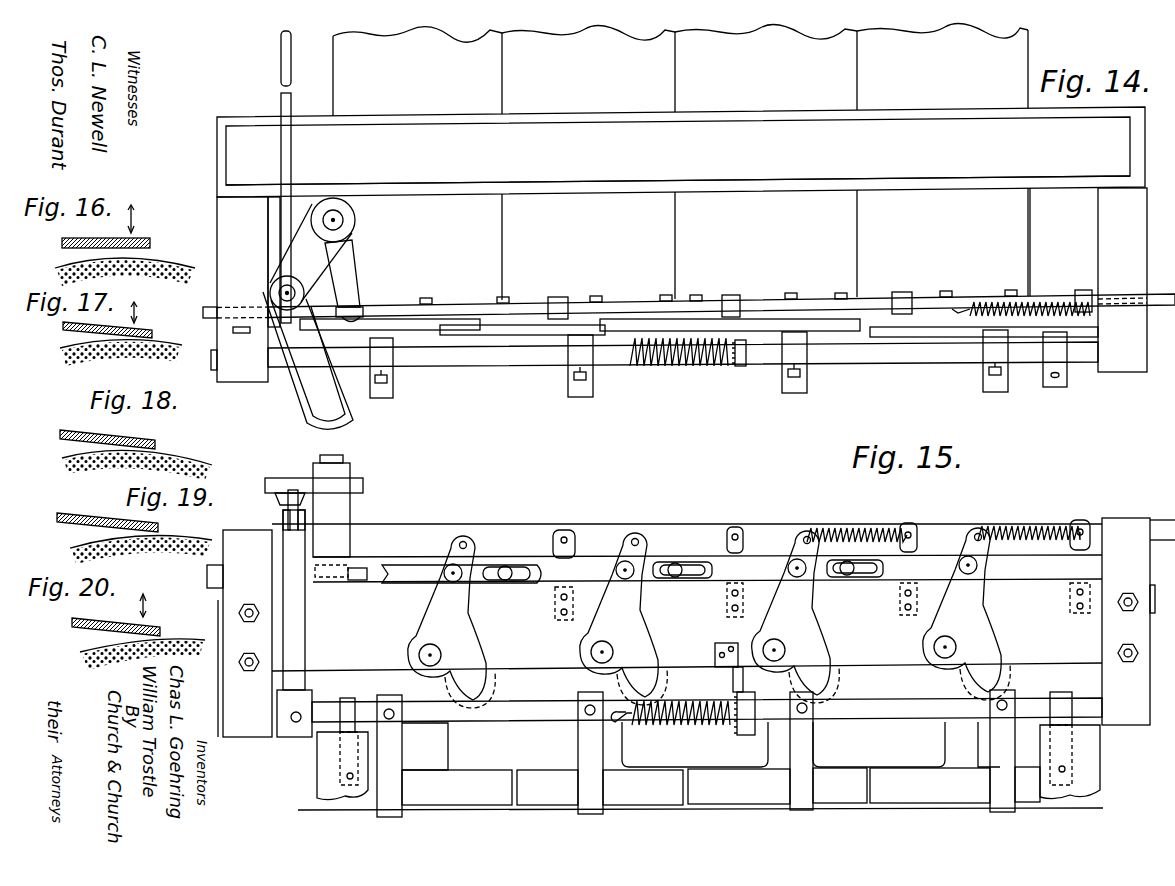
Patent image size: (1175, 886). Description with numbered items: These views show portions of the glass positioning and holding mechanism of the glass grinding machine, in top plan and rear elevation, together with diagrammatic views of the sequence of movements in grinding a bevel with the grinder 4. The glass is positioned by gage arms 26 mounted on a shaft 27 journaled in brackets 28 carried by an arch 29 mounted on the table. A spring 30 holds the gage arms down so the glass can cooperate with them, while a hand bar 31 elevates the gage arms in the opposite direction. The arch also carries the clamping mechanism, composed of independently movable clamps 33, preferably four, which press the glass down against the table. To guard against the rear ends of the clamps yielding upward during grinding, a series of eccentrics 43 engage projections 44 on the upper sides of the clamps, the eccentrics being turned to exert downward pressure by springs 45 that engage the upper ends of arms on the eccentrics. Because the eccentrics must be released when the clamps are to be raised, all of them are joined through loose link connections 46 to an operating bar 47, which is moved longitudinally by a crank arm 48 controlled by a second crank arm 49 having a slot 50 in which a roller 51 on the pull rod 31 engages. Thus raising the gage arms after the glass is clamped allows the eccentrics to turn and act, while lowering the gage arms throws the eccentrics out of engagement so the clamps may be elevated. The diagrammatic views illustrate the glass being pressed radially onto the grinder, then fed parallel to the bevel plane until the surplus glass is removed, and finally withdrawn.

In FIG. 16, the grinder 4 is at (125, 270).
In FIG. 17, the grinder 4 is at (125, 351).
In FIG. 18, the grinder 4 is at (192, 456).
In FIG. 19, the grinder 4 is at (190, 550).
In FIG. 20, the grinder 4 is at (90, 648).
In FIG. 14, the gage arms 26 is at (394, 393).
In FIG. 15, the gage arms 26 is at (392, 792).
In FIG. 14, the shaft 27 is at (477, 358).
In FIG. 15, the shaft 27 is at (505, 715).
In FIG. 14, the brackets 28 is at (247, 372).
In FIG. 15, the brackets 28 is at (1137, 717).
In FIG. 14, the arch 29 is at (420, 178).
In FIG. 14, the spring 30 is at (670, 366).
In FIG. 15, the spring 30 is at (680, 727).
In FIG. 14, the hand bar 31 is at (281, 70).
In FIG. 15, the hand bar 31 is at (300, 522).
In FIG. 14, the clamps 33 is at (680, 161).
In FIG. 15, the clamps 33 is at (721, 786).
In FIG. 15, the eccentrics 43 is at (467, 667).
In FIG. 15, the projections 44 is at (438, 750).
In FIG. 14, the springs 45 is at (1000, 300).
In FIG. 15, the springs 45 is at (872, 532).
In FIG. 14, the link connections 46 is at (540, 330).
In FIG. 15, the link connections 46 is at (537, 570).
In FIG. 14, the operating bar 47 is at (788, 303).
In FIG. 15, the operating bar 47 is at (647, 562).
In FIG. 14, the crank arm 48 is at (352, 290).
In FIG. 15, the crank arm 48 is at (367, 567).
In FIG. 14, the second crank arm 49 is at (312, 250).
In FIG. 15, the second crank arm 49 is at (345, 485).
In FIG. 14, the slot 50 is at (317, 403).
In FIG. 14, the roller 51 is at (297, 288).
In FIG. 15, the roller 51 is at (308, 475).